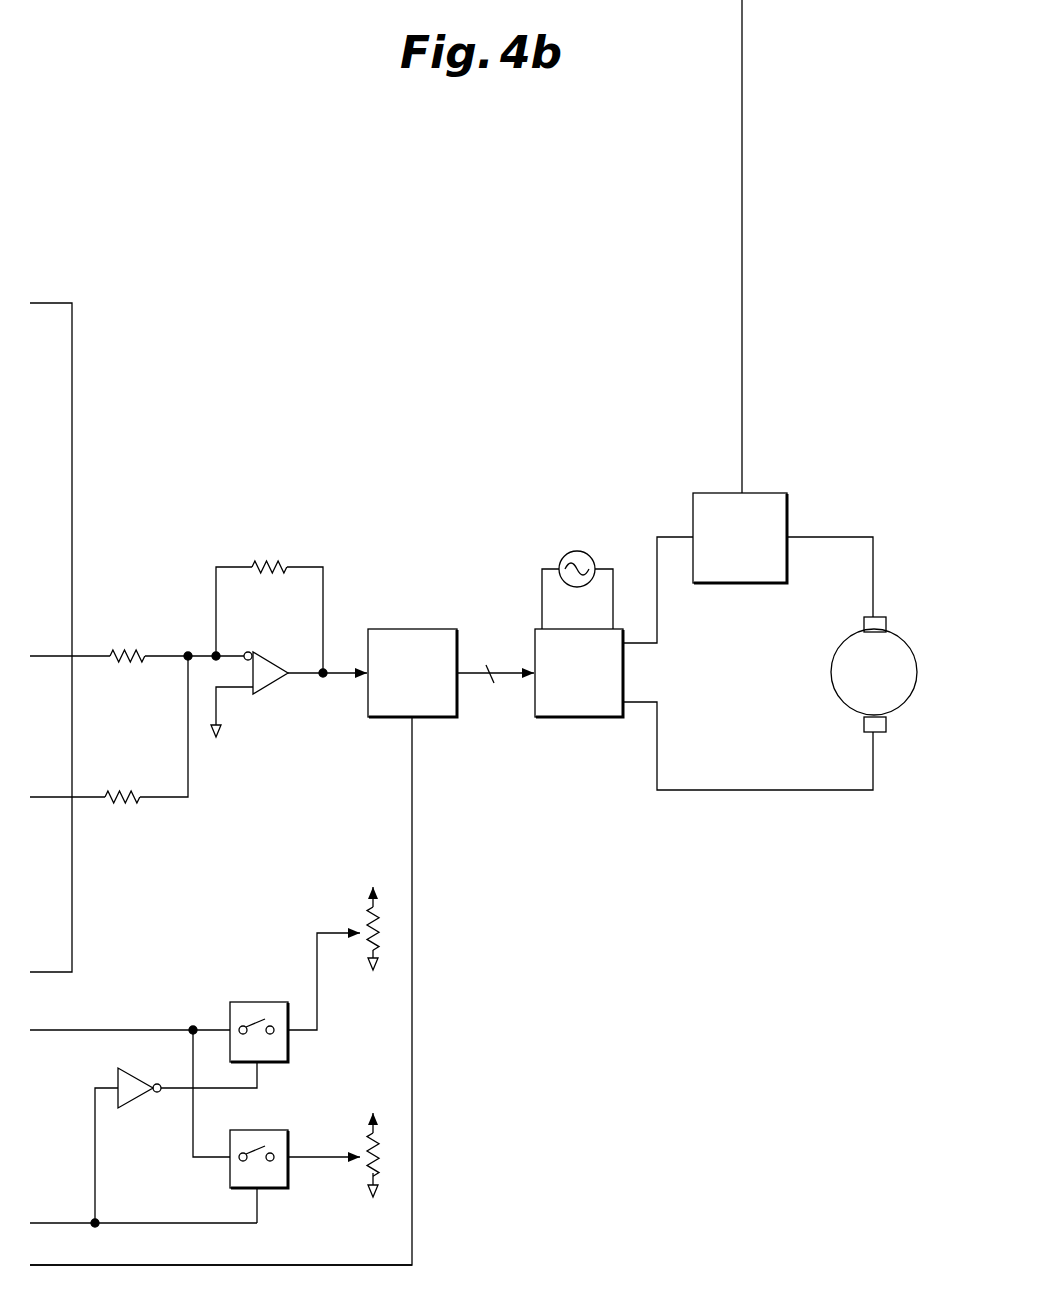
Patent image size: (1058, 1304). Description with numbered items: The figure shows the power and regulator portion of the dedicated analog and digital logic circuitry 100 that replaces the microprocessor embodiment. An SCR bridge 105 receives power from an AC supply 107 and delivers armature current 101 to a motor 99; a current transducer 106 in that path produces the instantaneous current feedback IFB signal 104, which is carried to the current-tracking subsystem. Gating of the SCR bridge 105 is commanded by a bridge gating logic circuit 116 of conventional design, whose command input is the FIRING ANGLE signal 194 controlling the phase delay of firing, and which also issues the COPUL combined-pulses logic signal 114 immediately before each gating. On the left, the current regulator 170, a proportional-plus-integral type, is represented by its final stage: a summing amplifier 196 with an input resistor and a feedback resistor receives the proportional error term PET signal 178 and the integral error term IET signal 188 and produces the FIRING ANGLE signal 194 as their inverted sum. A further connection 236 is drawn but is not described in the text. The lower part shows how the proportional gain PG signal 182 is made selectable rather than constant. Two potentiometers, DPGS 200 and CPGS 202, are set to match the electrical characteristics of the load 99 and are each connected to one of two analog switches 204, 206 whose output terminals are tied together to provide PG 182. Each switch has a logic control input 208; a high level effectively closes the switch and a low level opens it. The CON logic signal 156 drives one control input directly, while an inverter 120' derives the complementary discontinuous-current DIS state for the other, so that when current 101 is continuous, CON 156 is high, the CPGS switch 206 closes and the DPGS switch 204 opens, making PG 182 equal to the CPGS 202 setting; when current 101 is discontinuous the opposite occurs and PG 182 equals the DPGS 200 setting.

The dedicated analog and digital logic circuitry 100 is at (370, 256).
The instantaneous current feedback IFB signal 104 is at (43, 0).
The bus line 236 is at (42, 302).
The proportional error term PET signal 178 is at (44, 658).
The current regulator 170 is at (134, 640).
The integral error term IET signal 188 is at (50, 797).
The summing amplifier 196 is at (278, 684).
The FIRING ANGLE signal 194 is at (345, 675).
The bridge gating logic circuit 116 is at (403, 629).
The SCR bridge 105 is at (583, 717).
The AC supply 107 is at (575, 551).
The current transducer 106 is at (767, 493).
The armature current 101 is at (823, 537).
The motor 99 is at (843, 705).
The proportional gain PG signal 182 is at (40, 1032).
The DPGS analog switch 204 is at (258, 1002).
The CPGS analog switch 206 is at (288, 1180).
The DIS logic signal (inverted form) 120' is at (135, 1131).
The logic control input 208 is at (226, 1090).
The CON logic signal 156 is at (42, 1222).
The COPUL combined pulses logic signal 114 is at (45, 1265).
The DPGS potentiometer 200 is at (355, 912).
The CPGS potentiometer 202 is at (355, 1135).